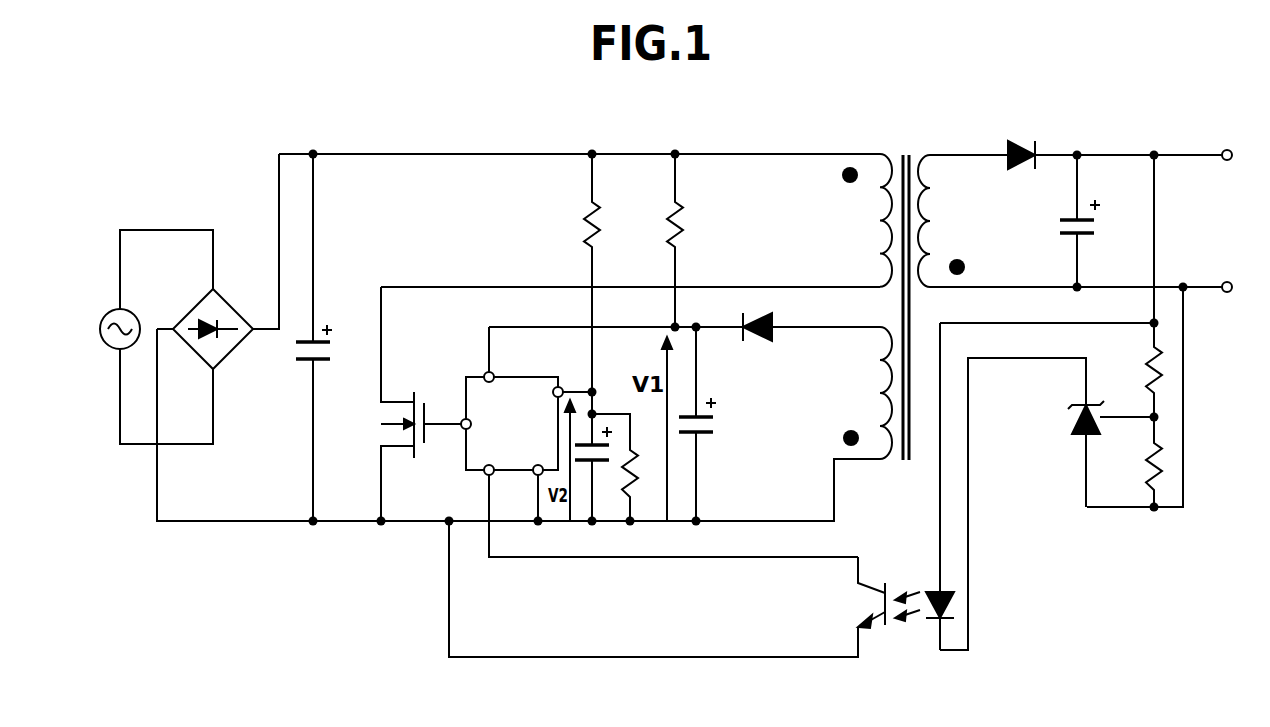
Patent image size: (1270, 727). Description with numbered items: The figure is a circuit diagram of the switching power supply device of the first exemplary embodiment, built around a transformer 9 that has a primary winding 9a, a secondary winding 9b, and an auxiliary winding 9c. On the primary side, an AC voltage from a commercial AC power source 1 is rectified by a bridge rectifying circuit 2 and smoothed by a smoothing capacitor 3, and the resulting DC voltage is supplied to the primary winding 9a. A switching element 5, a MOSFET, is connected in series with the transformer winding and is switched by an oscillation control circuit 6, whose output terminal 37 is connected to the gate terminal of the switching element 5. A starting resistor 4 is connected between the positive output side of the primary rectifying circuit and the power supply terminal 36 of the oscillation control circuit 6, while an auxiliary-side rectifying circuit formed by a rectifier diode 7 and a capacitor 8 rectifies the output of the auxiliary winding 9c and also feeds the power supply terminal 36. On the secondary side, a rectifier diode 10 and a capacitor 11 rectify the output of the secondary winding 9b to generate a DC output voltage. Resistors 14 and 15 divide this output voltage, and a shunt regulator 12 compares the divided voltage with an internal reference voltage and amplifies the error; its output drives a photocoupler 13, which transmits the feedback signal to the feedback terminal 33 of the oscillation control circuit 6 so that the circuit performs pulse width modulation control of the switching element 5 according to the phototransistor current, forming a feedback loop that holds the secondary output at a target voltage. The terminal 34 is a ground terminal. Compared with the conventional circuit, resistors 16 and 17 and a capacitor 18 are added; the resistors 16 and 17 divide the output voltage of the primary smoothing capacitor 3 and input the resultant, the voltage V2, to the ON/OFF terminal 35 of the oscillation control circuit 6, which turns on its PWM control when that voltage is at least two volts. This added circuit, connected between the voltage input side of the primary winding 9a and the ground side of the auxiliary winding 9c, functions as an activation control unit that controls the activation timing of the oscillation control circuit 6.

The commercial AC power source 1 is at (107, 312).
The bridge rectifying circuit 2 is at (236, 306).
The smoothing capacitor 3 is at (327, 325).
The starting resistor 4 is at (683, 211).
The switching element 5 is at (400, 393).
The oscillation control circuit 6 is at (659, 442).
The rectifier diode 7 is at (762, 343).
The capacitor 8 is at (712, 435).
The transformer 9 is at (906, 266).
The primary winding 9a is at (866, 220).
The secondary winding 9b is at (945, 221).
The auxiliary winding 9c is at (866, 393).
The rectifier diode 10 is at (1020, 140).
The capacitor 11 is at (1057, 228).
The shunt regulator 12 is at (1068, 418).
The photocoupler 13 is at (895, 632).
The resistor 14 is at (1168, 368).
The resistor 15 is at (1168, 468).
The resistor 16 is at (581, 215).
The resistor 17 is at (636, 487).
The capacitor 18 is at (603, 467).
The feedback terminal 33 is at (668, 500).
The ground terminal 34 is at (536, 482).
The ON/OFF terminal 35 is at (554, 393).
The power supply terminal 36 is at (492, 369).
The output terminal 37 is at (484, 426).